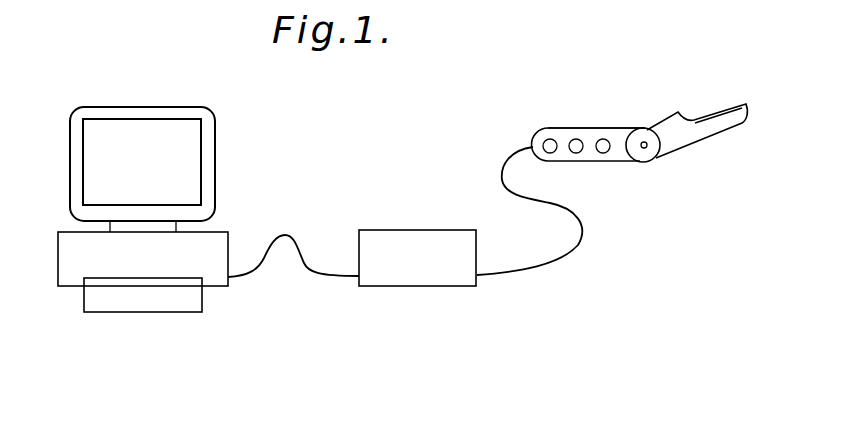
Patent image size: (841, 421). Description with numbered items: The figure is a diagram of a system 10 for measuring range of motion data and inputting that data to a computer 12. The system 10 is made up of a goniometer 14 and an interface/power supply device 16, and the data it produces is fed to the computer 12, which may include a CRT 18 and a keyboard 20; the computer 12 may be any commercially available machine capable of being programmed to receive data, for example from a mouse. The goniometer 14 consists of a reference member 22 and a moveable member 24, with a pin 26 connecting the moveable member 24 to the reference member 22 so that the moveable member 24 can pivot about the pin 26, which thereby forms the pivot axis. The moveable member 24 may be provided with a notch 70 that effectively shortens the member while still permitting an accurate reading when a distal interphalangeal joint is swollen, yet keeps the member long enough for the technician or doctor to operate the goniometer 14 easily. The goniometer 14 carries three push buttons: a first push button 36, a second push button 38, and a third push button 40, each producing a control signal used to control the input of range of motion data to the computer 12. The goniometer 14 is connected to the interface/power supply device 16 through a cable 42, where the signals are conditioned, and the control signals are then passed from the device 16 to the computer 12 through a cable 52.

The system 10 is at (681, 262).
The computer 12 is at (103, 93).
The goniometer 14 is at (623, 161).
The interface/power supply device 16 is at (414, 240).
The CRT 18 is at (192, 162).
The keyboard 20 is at (133, 305).
The reference member 22 is at (558, 128).
The moveable member 24 is at (712, 130).
The pin 26 is at (648, 147).
The first push button 36 is at (573, 153).
The second push button 38 is at (603, 138).
The third push button 40 is at (547, 141).
The cable 42 is at (502, 178).
The cable 52 is at (315, 282).
The notch 70 is at (697, 120).